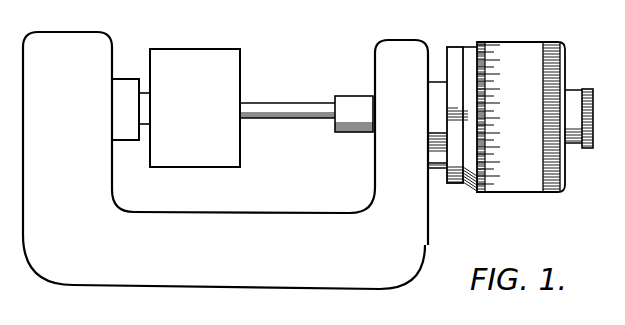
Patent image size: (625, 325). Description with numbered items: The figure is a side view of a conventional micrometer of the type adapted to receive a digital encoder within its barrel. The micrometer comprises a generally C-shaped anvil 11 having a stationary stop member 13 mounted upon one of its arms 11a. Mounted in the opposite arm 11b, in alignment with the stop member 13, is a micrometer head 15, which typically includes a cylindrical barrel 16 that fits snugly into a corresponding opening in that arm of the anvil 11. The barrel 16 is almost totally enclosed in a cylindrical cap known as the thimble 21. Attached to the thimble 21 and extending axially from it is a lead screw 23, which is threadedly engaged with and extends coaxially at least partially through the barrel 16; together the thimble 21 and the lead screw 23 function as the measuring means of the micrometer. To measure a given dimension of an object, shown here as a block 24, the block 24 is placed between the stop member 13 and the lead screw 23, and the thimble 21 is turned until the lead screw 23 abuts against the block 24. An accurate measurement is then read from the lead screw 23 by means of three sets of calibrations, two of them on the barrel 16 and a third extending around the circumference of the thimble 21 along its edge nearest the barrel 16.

The anvil 11 is at (132, 286).
The arm 11a is at (56, 32).
The opposite arm 11b is at (395, 38).
The stationary stop member 13 is at (147, 92).
The block 24 is at (185, 49).
The lead screw 23 is at (289, 103).
The micrometer head 15 is at (457, 195).
The cylindrical barrel 16 is at (447, 62).
The thimble 21 is at (509, 42).